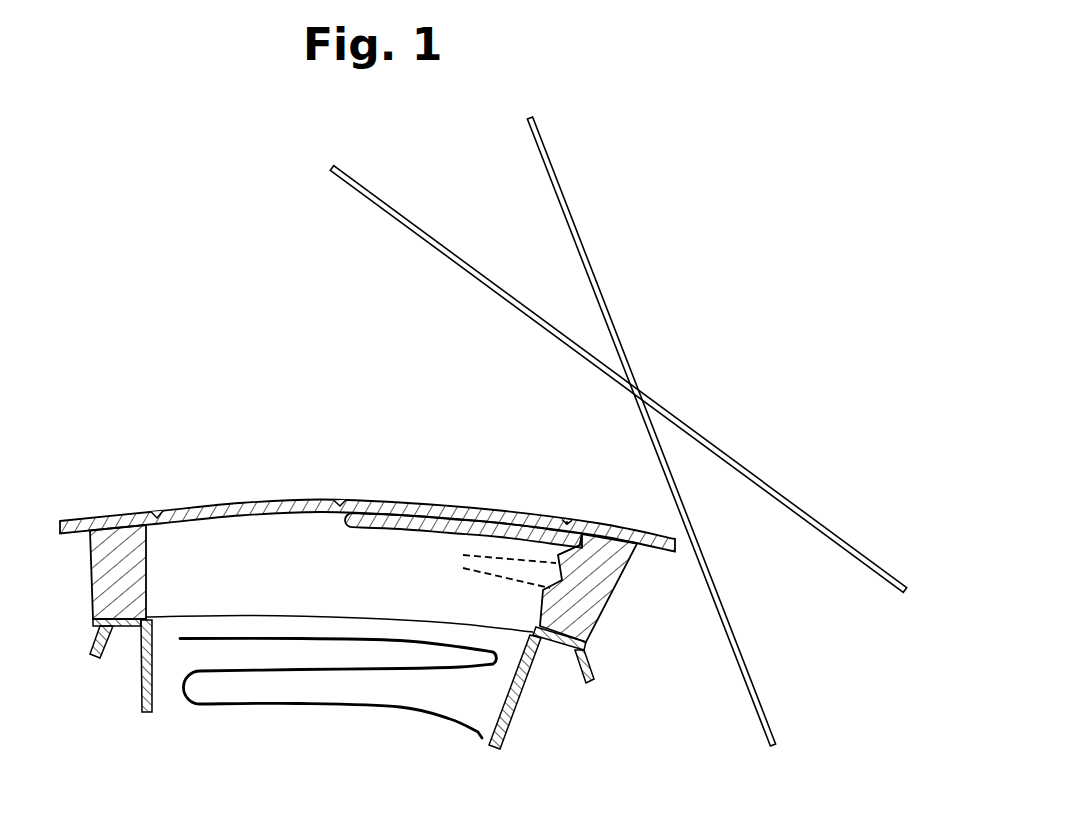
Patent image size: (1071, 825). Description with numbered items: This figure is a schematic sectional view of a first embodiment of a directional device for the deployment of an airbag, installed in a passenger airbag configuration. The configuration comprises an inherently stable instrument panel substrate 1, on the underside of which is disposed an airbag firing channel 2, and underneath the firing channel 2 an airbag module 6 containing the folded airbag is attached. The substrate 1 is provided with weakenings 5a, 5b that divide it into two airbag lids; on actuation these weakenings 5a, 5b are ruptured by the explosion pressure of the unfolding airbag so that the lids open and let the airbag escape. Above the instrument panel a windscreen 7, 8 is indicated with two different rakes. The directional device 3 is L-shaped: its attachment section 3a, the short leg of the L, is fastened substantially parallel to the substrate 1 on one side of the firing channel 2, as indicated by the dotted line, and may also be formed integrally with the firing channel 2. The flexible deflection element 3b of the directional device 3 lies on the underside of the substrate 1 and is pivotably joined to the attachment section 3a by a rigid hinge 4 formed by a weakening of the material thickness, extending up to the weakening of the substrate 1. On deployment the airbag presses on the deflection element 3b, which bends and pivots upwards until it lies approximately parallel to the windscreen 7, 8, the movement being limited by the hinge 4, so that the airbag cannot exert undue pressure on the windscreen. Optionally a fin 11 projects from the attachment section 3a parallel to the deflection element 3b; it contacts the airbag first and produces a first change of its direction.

The inherently stable instrument panel substrate 1 is at (108, 515).
The airbag firing channel 2 is at (90, 575).
The directional device 3 is at (489, 596).
The attachment section 3a is at (568, 552).
The flexible deflection element 3b is at (378, 527).
The rigid hinge 4 is at (584, 534).
The weakening 5a is at (160, 511).
The weakening 5b is at (567, 519).
The airbag module 6 is at (143, 682).
The windscreen 7 is at (400, 212).
The windscreen 8 is at (569, 207).
The fin 11 is at (462, 557).